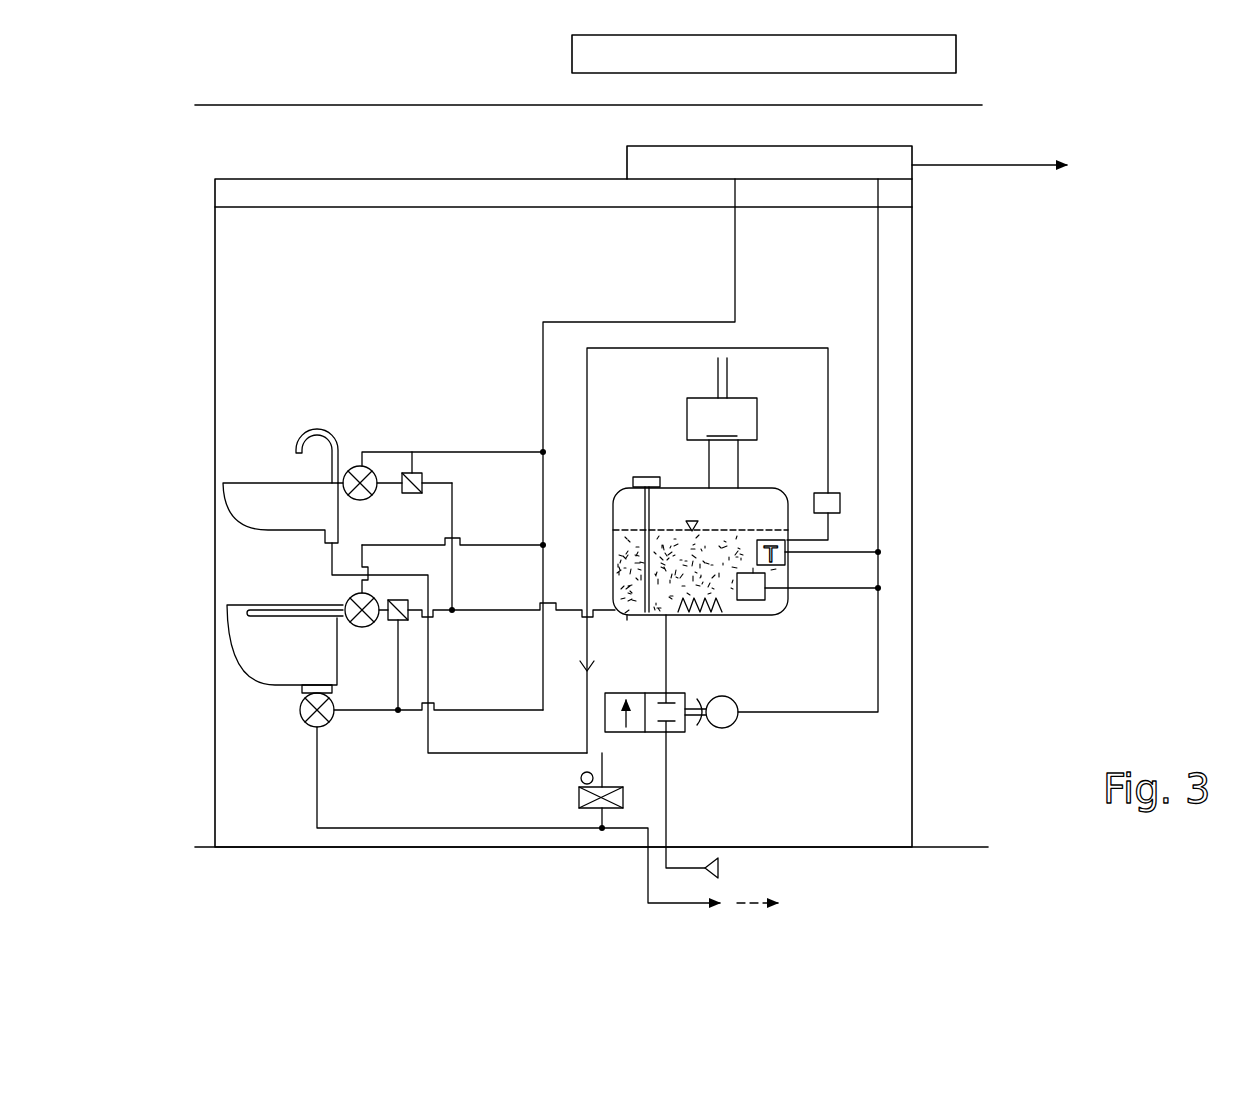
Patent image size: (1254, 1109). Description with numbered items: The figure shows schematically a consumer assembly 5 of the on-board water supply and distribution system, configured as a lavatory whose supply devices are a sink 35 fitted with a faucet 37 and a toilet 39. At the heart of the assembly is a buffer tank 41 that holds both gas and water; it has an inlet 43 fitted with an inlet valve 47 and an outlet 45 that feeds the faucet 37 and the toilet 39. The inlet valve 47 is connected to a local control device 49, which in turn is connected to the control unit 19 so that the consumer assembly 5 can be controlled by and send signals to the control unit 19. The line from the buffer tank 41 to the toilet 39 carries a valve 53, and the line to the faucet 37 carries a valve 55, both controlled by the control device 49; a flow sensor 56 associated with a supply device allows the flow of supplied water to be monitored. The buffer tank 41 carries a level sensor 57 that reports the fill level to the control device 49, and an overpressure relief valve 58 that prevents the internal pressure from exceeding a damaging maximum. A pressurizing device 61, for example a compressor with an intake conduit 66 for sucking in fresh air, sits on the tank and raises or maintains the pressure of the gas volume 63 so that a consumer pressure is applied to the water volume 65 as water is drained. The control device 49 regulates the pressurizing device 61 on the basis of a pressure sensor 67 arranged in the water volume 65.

The consumer assembly 5 is at (950, 316).
The control unit 19 is at (1009, 165).
The sink 35 is at (250, 503).
The faucet 37 is at (318, 428).
The toilet 39 is at (250, 648).
The buffer tank 41 is at (702, 513).
The inlet 43 is at (668, 641).
The outlet 45 is at (628, 618).
The inlet valve 47 is at (677, 730).
The control device 49 is at (843, 157).
The valve 53 is at (365, 622).
The valve 55 is at (364, 494).
The flow sensor 56 is at (424, 478).
The level sensor 57 is at (647, 477).
The overpressure relief valve 58 is at (842, 503).
The pressurizing device 61 is at (722, 443).
The gas volume 63 is at (683, 500).
The water volume 65 is at (725, 590).
The intake conduit 66 is at (718, 377).
The pressure sensor 67 is at (775, 596).